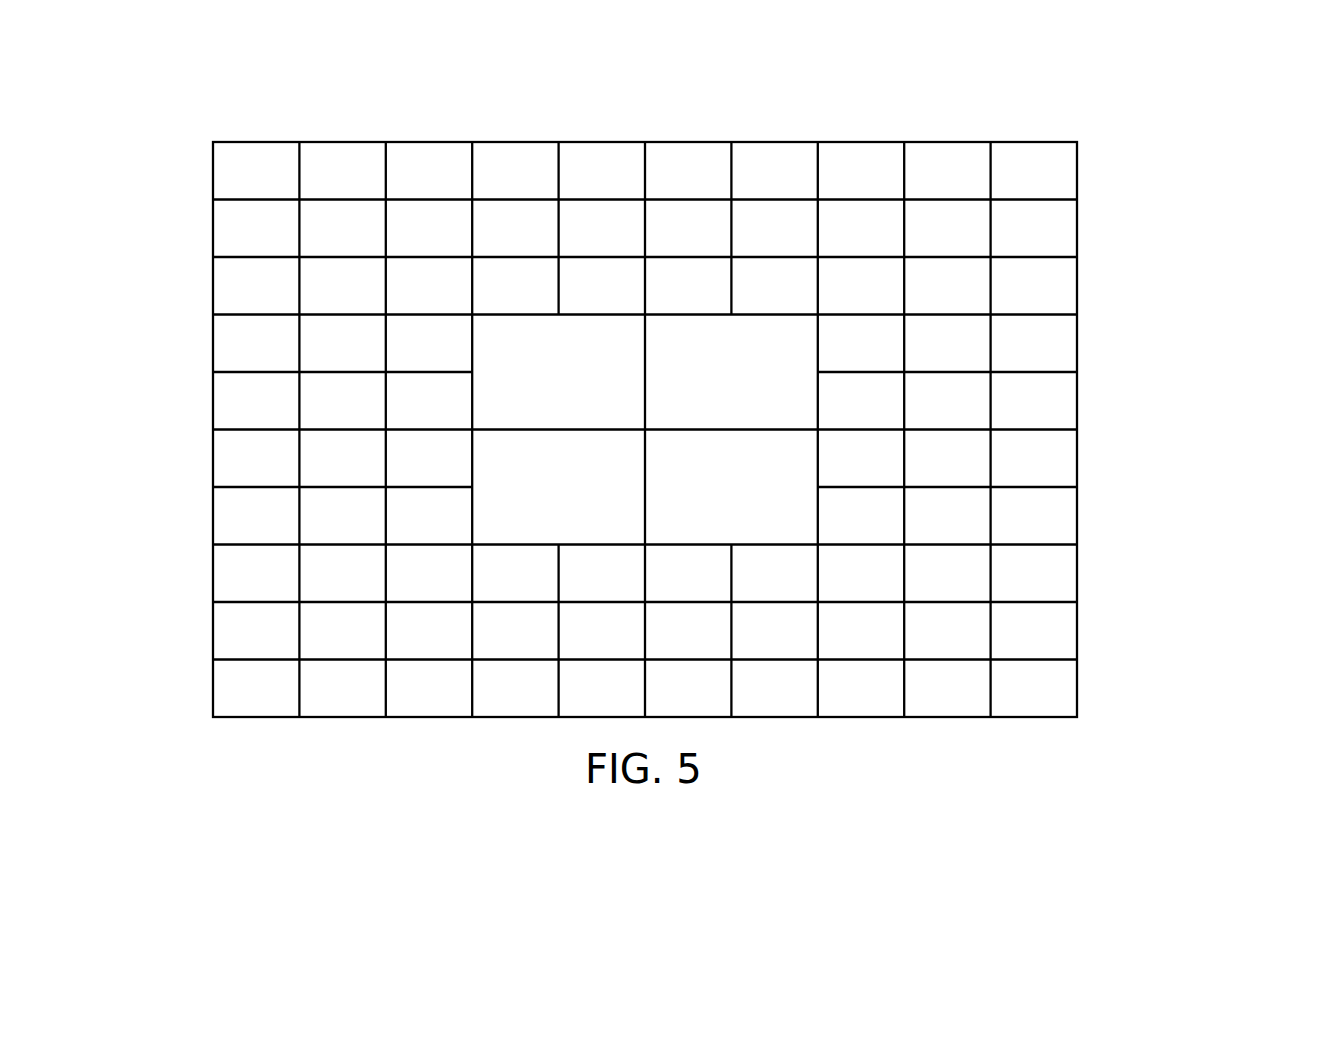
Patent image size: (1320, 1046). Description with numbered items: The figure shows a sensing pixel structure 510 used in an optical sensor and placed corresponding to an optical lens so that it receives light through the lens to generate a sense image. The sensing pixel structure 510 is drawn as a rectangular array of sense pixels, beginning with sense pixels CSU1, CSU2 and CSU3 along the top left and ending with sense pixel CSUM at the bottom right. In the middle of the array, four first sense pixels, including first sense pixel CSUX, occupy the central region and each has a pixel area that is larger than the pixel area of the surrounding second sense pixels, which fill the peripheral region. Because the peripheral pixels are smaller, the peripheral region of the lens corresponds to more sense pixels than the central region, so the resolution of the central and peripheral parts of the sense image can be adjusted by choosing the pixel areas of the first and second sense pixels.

The sensing pixel structure 510 is at (1142, 82).
The sense pixel CSU1 is at (226, 175).
The sense pixel CSU2 is at (226, 233).
The sense pixel CSU3 is at (226, 291).
The sense pixel CSUM is at (1053, 687).
The first sense pixel CSUX is at (558, 372).